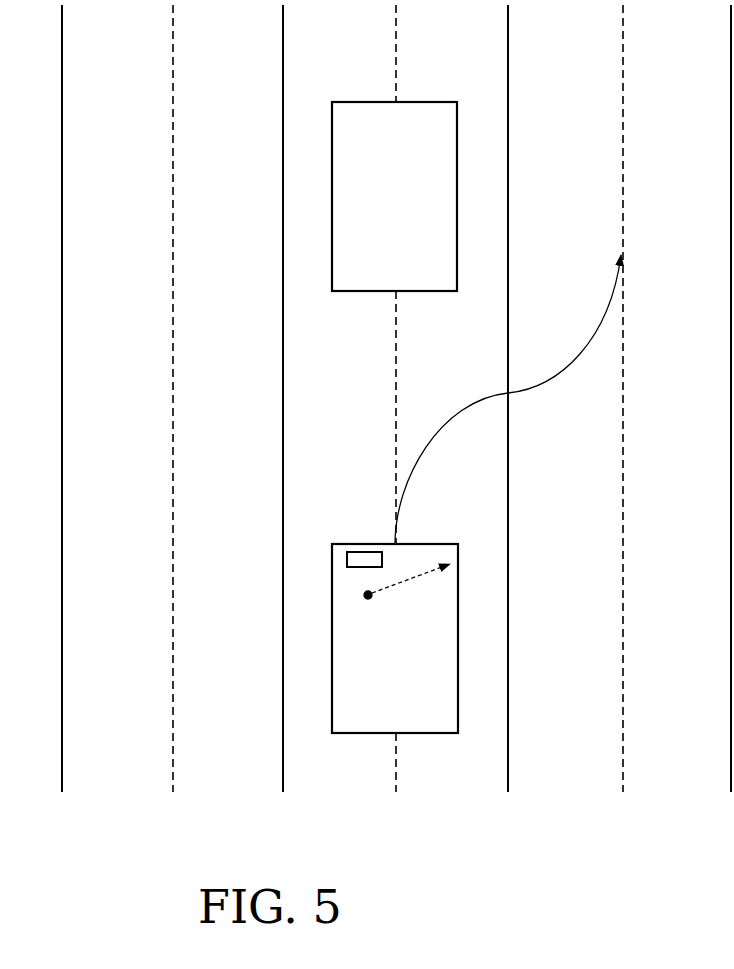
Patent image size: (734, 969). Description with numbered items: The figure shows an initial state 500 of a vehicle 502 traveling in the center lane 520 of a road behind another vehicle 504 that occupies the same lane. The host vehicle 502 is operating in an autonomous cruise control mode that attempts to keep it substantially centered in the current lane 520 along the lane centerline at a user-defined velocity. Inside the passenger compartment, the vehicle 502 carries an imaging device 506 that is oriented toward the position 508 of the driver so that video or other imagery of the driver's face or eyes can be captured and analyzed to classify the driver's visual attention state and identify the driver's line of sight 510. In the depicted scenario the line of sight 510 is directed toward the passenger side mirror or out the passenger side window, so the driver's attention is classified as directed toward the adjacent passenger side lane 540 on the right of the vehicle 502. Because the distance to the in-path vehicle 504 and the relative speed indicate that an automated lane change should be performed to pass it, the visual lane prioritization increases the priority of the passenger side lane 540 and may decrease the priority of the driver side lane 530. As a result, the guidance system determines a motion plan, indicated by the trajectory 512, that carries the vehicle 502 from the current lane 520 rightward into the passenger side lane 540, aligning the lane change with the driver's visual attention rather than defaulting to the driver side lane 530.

The initial state 500 is at (302, 616).
The vehicle 502 is at (458, 640).
The other vehicle 504 is at (457, 196).
The imaging device 506 is at (365, 552).
The position of a driver 508 is at (371, 598).
The line of sight 510 is at (405, 581).
The trajectory 512 is at (555, 380).
The center lane 520 is at (420, 748).
The driver side lane 530 is at (190, 748).
The passenger side lane 540 is at (648, 752).